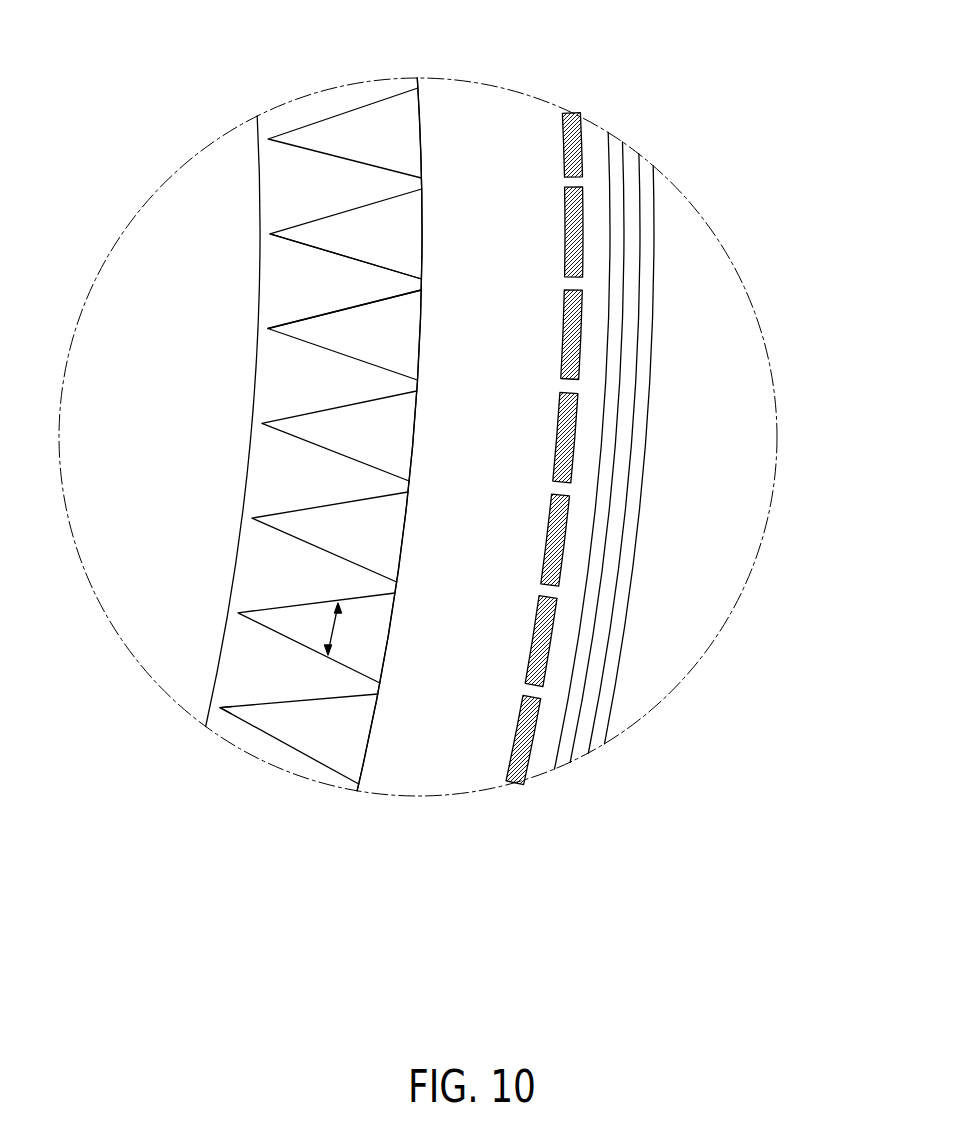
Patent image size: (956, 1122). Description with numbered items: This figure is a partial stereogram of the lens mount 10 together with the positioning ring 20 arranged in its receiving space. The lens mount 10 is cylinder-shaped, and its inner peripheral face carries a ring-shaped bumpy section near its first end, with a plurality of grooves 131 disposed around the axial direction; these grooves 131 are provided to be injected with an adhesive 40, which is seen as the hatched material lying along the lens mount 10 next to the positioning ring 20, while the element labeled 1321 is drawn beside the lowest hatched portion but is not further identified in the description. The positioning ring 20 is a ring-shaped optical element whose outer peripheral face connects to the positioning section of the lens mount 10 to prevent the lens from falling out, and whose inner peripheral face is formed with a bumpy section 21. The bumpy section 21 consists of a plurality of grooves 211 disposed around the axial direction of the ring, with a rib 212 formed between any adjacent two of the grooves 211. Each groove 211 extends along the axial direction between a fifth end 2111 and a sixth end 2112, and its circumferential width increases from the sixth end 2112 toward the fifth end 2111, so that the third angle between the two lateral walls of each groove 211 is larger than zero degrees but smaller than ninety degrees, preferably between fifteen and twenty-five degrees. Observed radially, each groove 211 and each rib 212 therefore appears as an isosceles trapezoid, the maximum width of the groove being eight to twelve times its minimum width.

The lens mount 10 is at (667, 423).
The positioning ring 20 is at (483, 118).
The bumpy section 21 is at (289, 458).
The groove 211 is at (269, 492).
The fifth end 2111 is at (350, 738).
The sixth end 2112 is at (223, 705).
The rib 212 is at (295, 282).
The groove 131 is at (603, 423).
The positioning protrusion 1321 is at (533, 688).
The adhesive 40 is at (577, 435).